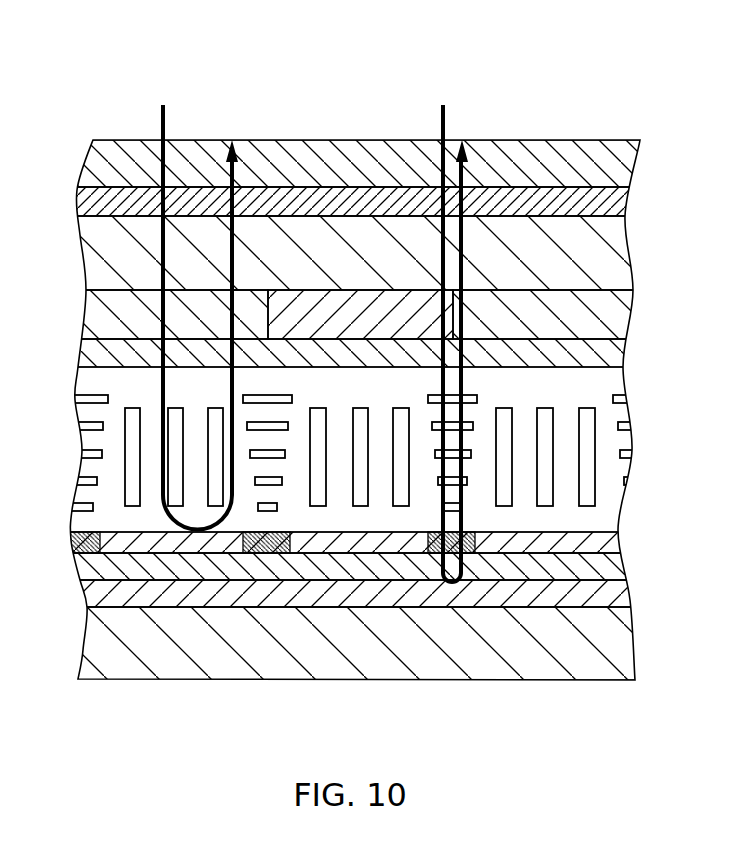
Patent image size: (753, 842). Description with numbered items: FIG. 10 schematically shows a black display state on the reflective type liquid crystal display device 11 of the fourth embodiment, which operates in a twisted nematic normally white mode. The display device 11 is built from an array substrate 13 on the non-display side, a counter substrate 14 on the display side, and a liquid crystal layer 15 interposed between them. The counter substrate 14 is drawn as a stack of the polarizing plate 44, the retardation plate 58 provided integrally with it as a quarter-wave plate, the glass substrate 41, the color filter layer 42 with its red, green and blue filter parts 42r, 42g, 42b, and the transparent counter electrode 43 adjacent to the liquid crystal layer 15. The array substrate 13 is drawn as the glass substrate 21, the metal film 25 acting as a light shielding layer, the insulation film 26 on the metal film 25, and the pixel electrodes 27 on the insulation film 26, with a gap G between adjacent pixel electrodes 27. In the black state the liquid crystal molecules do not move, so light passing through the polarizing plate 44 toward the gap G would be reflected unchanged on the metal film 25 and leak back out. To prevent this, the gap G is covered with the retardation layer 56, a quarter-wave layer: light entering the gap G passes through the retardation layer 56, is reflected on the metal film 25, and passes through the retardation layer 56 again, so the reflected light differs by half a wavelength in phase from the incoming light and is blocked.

The reflective type liquid crystal display device 11 is at (349, 59).
The counter substrate 14 is at (374, 126).
The array substrate 13 is at (538, 690).
The polarizing plate 44 is at (500, 148).
The retardation plate 58 is at (547, 202).
The glass substrate 41 is at (590, 237).
The color filter layer 42 is at (110, 287).
The filter part 42r is at (98, 309).
The filter part 42g is at (310, 290).
The filter part 42b is at (597, 312).
The counter electrode 43 is at (603, 357).
The liquid crystal layer 15 is at (608, 415).
The pixel electrode 27 is at (598, 532).
The insulation film 26 is at (610, 567).
The metal film 25 is at (610, 600).
The glass substrate 21 is at (615, 680).
The retardation layer 56 is at (468, 553).
The gap G is at (443, 556).